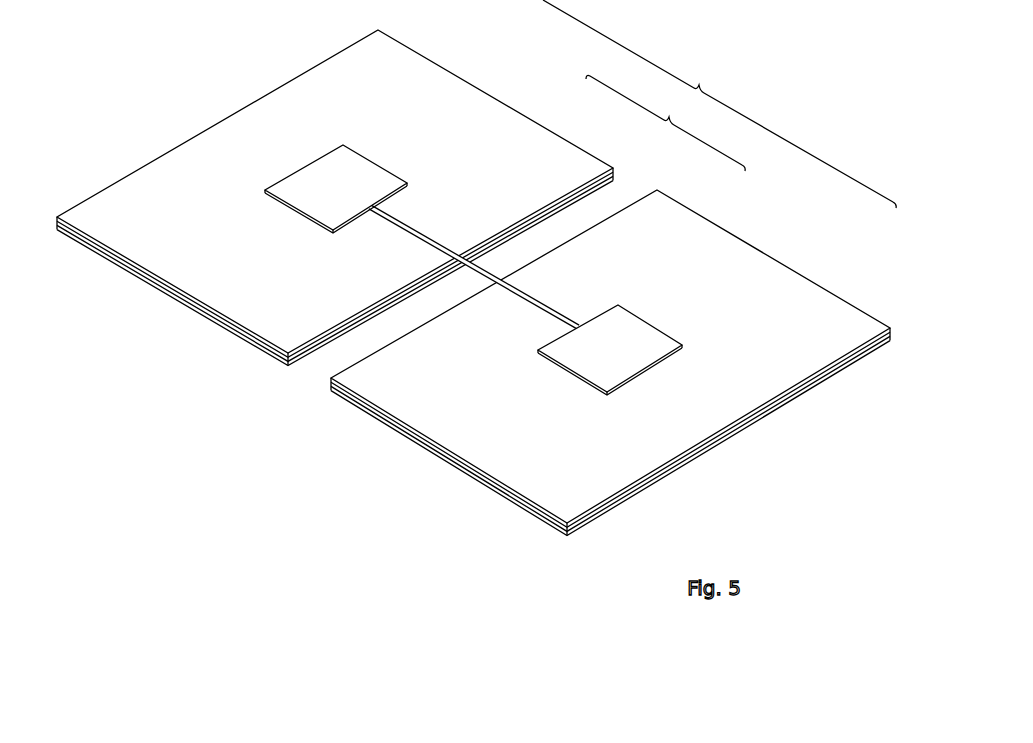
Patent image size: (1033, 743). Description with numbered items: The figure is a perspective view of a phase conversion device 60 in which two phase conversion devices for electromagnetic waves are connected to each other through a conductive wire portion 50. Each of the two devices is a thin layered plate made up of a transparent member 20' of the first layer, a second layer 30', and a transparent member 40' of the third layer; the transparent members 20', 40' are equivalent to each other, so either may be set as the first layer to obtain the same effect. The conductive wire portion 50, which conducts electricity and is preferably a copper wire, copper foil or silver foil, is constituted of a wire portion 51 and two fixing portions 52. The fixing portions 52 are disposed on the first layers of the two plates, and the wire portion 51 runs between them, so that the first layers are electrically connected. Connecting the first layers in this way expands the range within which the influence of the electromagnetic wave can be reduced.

The transparent member of the first layer 20' is at (473, 357).
The second layer 30' is at (473, 367).
The transparent member of the third layer 40' is at (473, 381).
The conductive wire portion 50 is at (505, 235).
The wire portion 51 is at (489, 277).
The fixing portion 52 is at (397, 182).
The phase conversion device 60 is at (719, 104).